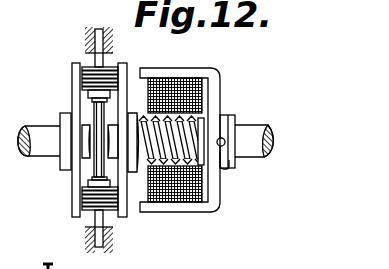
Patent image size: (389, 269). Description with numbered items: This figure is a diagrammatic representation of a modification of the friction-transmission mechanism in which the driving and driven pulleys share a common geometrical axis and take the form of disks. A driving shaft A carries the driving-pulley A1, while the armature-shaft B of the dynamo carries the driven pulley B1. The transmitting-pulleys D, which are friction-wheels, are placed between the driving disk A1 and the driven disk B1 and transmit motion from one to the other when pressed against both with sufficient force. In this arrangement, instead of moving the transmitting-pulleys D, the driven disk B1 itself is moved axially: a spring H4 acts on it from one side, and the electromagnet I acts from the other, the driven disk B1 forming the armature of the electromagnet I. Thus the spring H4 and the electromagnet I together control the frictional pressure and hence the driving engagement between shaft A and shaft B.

The driving shaft A is at (40, 132).
The driving-pulley A1 is at (78, 183).
The armature-shaft B is at (250, 150).
The driven pulley B1 is at (124, 198).
The transmitting-pulleys D is at (82, 72).
The electromagnet I is at (213, 85).
The spring H4 is at (192, 133).